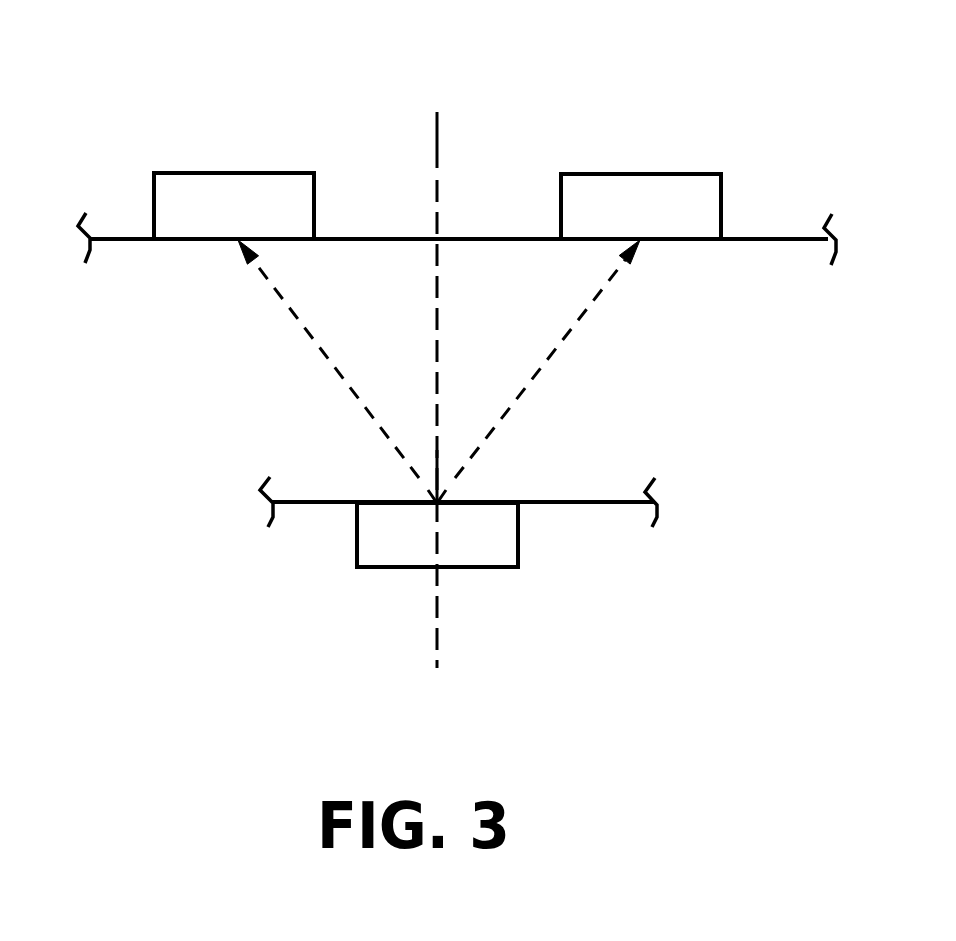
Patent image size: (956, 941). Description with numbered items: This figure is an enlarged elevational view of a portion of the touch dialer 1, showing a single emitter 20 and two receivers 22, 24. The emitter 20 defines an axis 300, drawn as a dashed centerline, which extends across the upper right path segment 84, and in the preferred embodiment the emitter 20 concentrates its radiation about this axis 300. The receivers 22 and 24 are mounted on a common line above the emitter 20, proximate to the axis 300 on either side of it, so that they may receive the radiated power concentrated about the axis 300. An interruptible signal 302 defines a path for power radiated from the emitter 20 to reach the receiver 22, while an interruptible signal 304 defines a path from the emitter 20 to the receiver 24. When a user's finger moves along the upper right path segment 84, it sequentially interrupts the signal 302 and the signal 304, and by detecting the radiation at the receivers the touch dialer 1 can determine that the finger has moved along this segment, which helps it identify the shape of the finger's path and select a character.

The touch dialer 1 is at (822, 618).
The emitter 20 is at (455, 545).
The receiver 22 is at (231, 183).
The receiver 24 is at (675, 184).
The upper right path segment 84 is at (398, 265).
The axis 300 is at (437, 152).
The interruptible signal 302 is at (308, 338).
The interruptible signal 304 is at (567, 338).